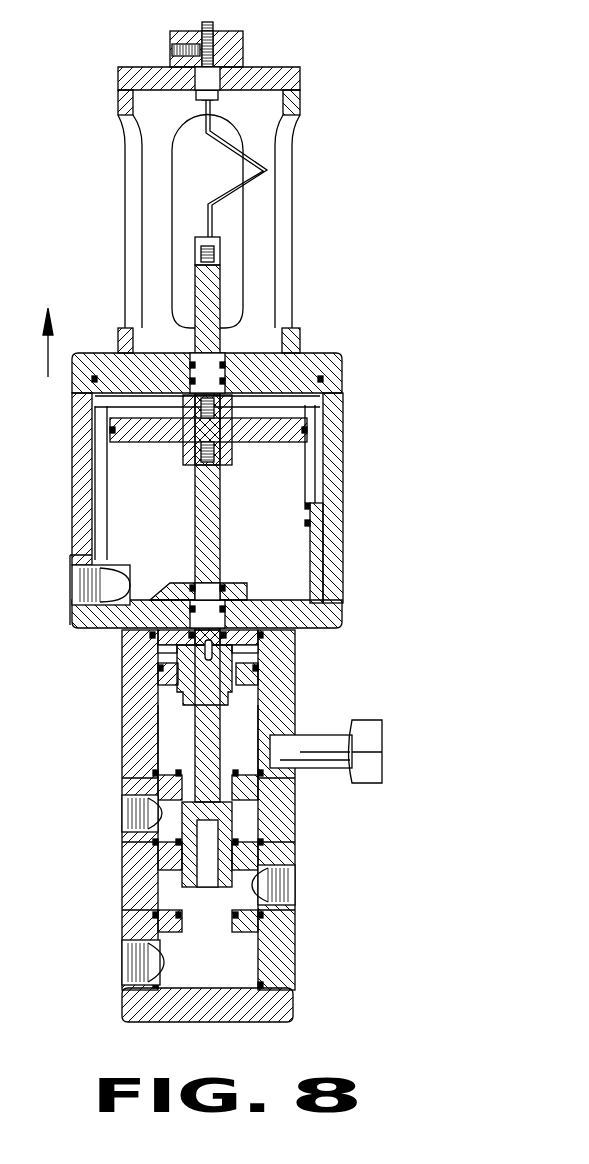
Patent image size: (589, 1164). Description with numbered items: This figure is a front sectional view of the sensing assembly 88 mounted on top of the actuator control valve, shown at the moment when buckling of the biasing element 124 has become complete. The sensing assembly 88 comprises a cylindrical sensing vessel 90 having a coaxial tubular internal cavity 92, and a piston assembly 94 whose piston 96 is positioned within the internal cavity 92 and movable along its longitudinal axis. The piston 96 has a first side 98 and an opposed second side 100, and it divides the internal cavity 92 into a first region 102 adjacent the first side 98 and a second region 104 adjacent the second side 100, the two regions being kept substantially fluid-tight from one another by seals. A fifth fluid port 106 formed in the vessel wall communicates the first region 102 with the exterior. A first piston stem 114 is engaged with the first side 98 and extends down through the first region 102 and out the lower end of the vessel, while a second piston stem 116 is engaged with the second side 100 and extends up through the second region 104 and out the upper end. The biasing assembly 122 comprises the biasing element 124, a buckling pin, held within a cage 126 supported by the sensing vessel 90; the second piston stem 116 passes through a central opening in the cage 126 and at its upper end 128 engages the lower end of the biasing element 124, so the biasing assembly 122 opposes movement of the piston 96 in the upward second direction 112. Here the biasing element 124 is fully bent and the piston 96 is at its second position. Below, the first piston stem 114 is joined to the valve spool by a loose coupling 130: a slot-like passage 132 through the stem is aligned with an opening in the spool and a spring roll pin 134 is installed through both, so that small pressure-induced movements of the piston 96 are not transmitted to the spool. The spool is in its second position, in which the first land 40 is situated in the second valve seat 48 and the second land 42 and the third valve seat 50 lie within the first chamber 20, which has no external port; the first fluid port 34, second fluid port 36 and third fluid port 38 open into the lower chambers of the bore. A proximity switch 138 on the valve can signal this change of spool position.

The first chamber 20 is at (218, 826).
The first fluid port 34 is at (158, 808).
The second fluid port 36 is at (255, 895).
The third fluid port 38 is at (165, 960).
The first land 40 is at (185, 872).
The second land 42 is at (178, 706).
The second valve seat 48 is at (258, 826).
The third valve seat 50 is at (232, 700).
The sensing assembly 88 is at (220, 465).
The sensing vessel 90 is at (335, 470).
The internal cavity 92 is at (280, 485).
The piston assembly 94 is at (282, 540).
The piston 96 is at (300, 426).
The first side 98 is at (107, 446).
The second side 100 is at (85, 397).
The first region 102 is at (340, 608).
The second region 104 is at (300, 410).
The fifth fluid port 106 is at (72, 585).
The second direction 112 is at (50, 357).
The first piston stem 114 is at (192, 575).
The second piston stem 116 is at (196, 300).
The biasing assembly 122 is at (322, 38).
The biasing element 124 is at (268, 176).
The cage 126 is at (284, 280).
The upper end 128 is at (200, 237).
The loose coupling 130 is at (156, 648).
The slot-like passage 132 is at (215, 652).
The spring roll pin 134 is at (158, 680).
The proximity switch 138 is at (375, 777).